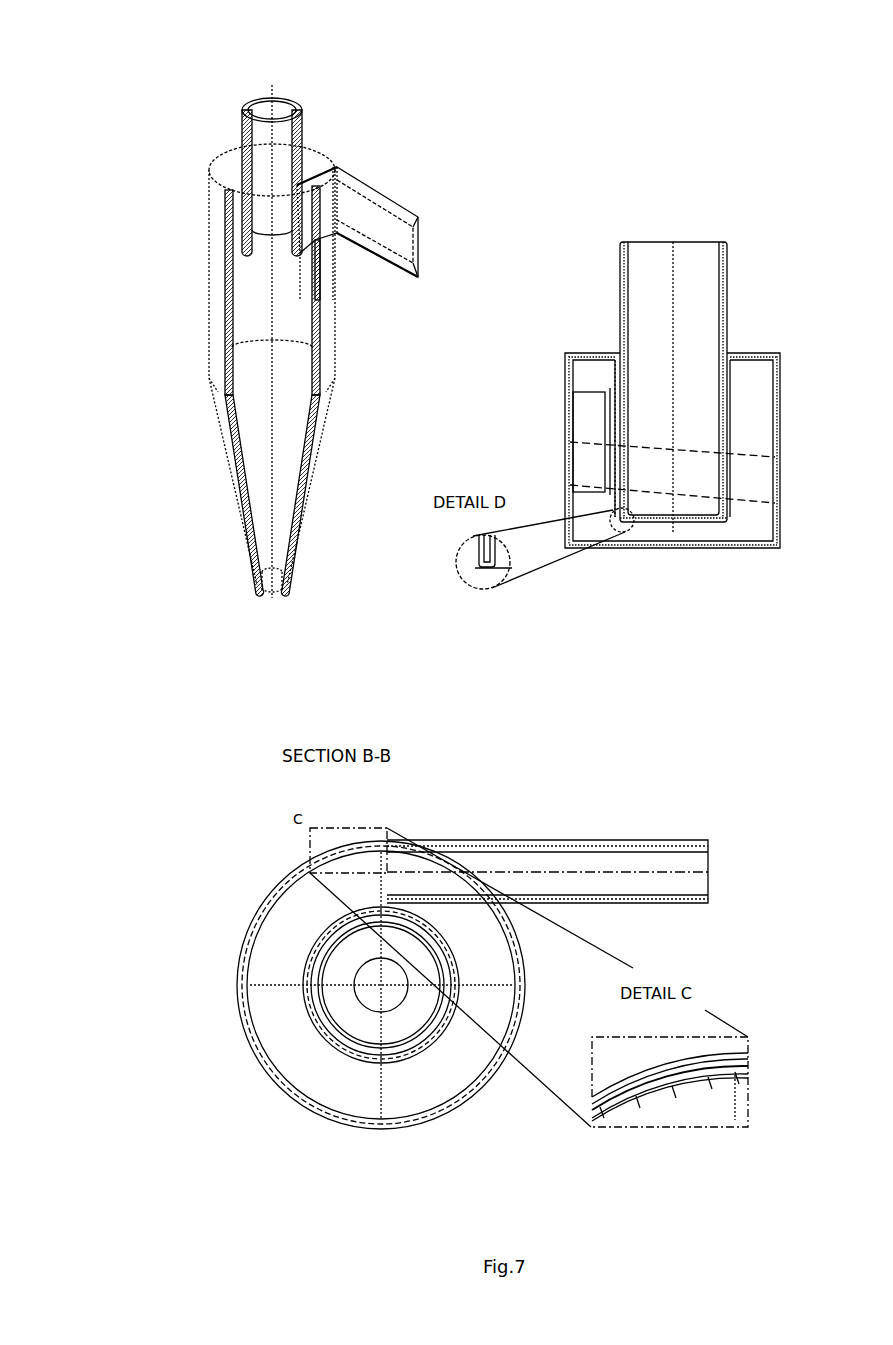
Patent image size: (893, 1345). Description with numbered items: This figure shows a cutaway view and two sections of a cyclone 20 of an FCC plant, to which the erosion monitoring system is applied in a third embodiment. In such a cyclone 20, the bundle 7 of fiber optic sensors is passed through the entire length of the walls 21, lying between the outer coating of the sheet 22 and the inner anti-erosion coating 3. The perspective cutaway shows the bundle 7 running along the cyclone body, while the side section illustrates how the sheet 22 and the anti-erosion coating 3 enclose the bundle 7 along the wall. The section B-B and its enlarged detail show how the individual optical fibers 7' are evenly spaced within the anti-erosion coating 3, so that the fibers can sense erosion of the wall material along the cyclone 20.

The bundle of fiber optic sensors 7 is at (484, 267).
The optical fibers 7' is at (670, 1111).
The anti-erosion coating 3 is at (630, 260).
The cyclone 20 is at (158, 184).
The walls 21 is at (292, 497).
The sheet 22 is at (617, 320).